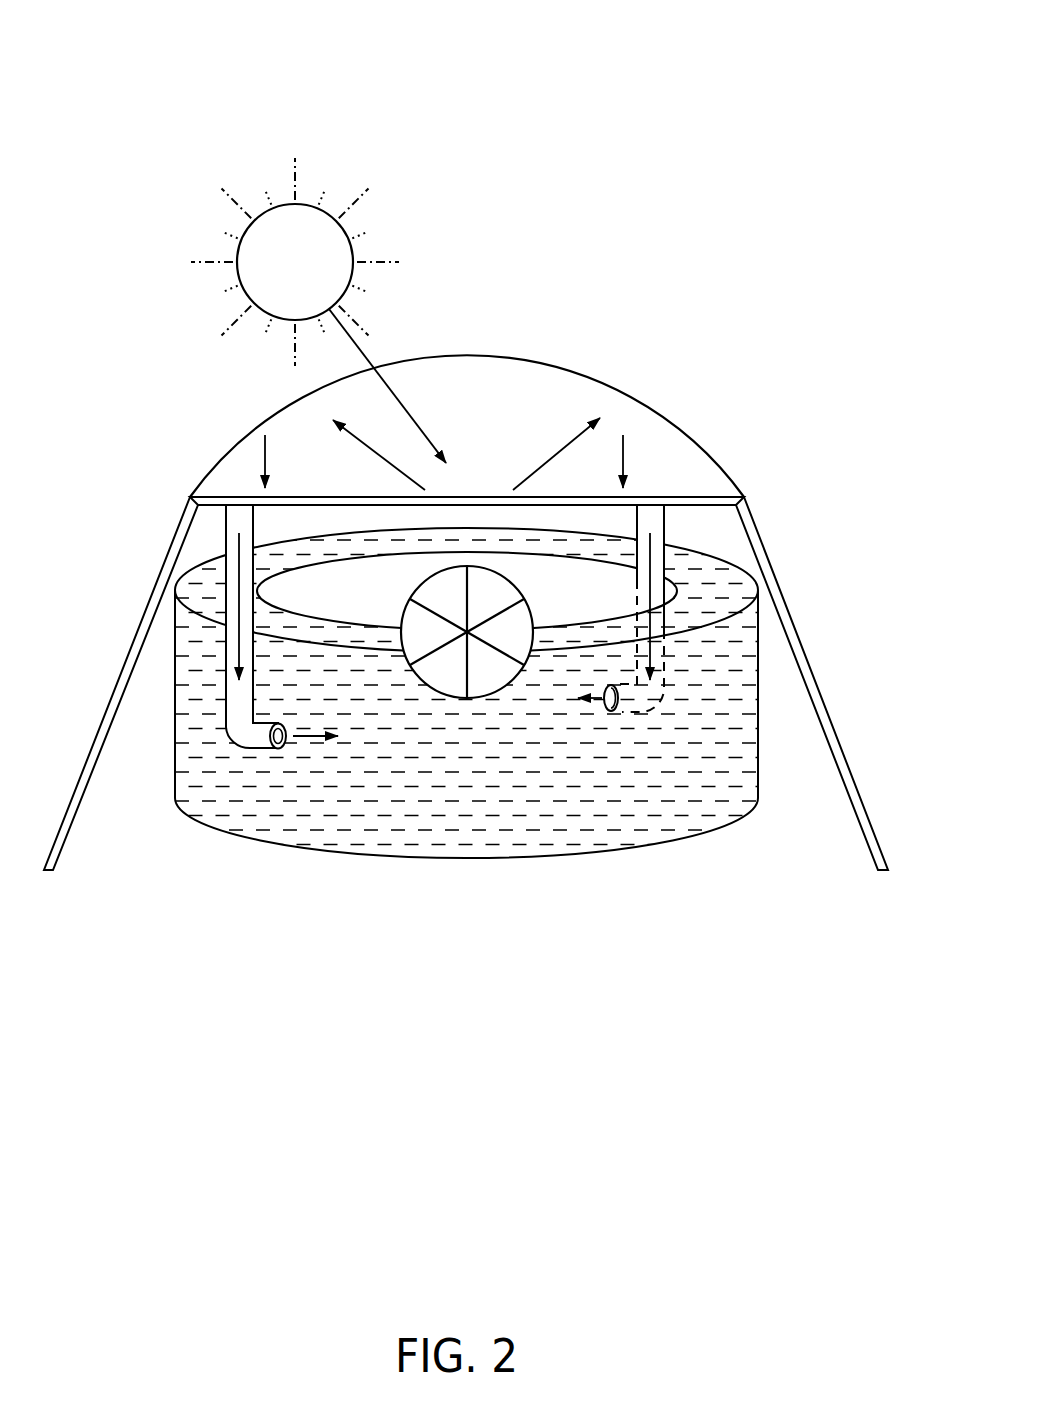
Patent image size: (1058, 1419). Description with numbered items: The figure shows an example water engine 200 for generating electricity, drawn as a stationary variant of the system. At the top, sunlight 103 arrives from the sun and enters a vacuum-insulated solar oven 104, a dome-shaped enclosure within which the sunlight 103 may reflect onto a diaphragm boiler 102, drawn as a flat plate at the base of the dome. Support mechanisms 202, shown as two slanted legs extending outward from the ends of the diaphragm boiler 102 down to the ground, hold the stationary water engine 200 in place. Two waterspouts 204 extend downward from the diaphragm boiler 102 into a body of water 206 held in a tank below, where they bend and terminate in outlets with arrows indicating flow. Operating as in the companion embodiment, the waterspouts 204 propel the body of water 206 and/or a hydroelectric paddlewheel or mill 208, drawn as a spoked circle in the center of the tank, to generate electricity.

The water engine 200 is at (886, 32).
The diaphragm boiler 102 is at (643, 497).
The sunlight 103 is at (375, 362).
The solar oven 104 is at (656, 413).
The support mechanisms 202 is at (128, 652).
The waterspouts 204 is at (253, 696).
The body of water 206 is at (293, 610).
The hydroelectric paddlewheel or mill 208 is at (520, 600).